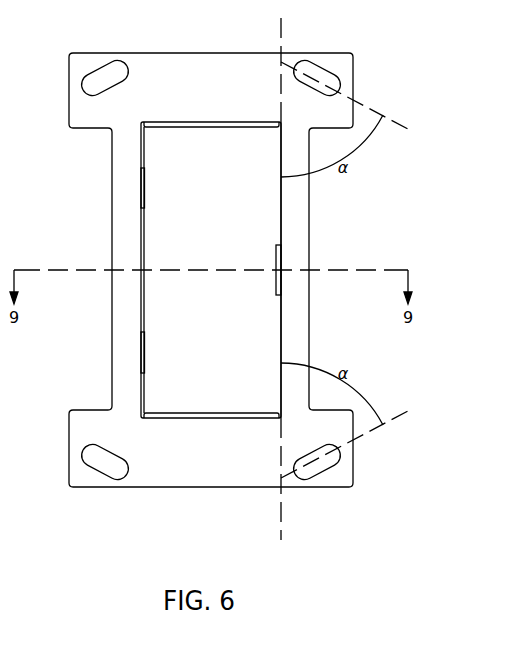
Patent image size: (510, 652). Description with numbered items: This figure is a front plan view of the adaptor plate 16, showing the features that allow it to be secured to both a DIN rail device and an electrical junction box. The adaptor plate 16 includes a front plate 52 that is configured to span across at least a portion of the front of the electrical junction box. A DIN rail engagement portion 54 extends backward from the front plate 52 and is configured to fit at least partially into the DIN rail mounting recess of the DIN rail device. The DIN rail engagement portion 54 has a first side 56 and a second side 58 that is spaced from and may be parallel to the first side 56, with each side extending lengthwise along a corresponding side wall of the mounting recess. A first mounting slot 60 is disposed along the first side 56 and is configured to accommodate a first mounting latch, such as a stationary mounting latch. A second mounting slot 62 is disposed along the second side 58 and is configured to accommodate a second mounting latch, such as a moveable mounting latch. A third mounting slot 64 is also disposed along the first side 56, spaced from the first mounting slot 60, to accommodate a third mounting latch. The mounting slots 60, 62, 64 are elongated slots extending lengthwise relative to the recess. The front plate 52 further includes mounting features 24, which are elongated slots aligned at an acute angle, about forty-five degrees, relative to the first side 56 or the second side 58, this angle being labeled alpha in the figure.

The adaptor plate 16 is at (274, 255).
The mounting features 24 is at (103, 70).
The front plate 52 is at (192, 58).
The DIN rail engagement portion 54 is at (183, 400).
The first side 56 is at (141, 300).
The second side 58 is at (281, 218).
The first mounting slot 60 is at (144, 187).
The second mounting slot 62 is at (276, 250).
The third mounting slot 64 is at (144, 355).